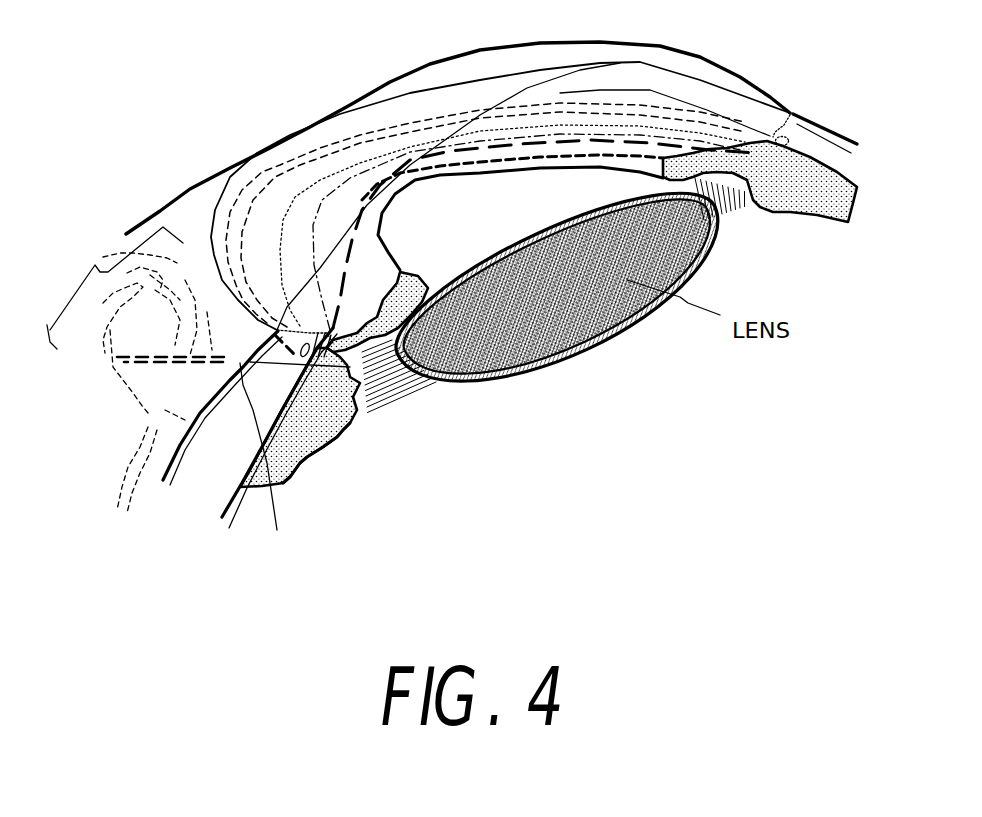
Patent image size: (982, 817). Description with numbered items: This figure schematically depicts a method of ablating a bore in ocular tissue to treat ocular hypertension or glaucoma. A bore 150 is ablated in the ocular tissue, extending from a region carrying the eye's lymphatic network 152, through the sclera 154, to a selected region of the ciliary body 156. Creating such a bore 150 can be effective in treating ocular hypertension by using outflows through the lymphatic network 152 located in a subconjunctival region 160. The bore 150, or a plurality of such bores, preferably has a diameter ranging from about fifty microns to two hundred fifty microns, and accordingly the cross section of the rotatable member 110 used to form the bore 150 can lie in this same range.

The rotatable member 110 is at (203, 358).
The bore 150 is at (340, 423).
The lymphatic network 152 is at (129, 370).
The sclera 154 is at (263, 387).
The ciliary body 156 is at (355, 390).
The subconjunctival region 160 is at (268, 468).